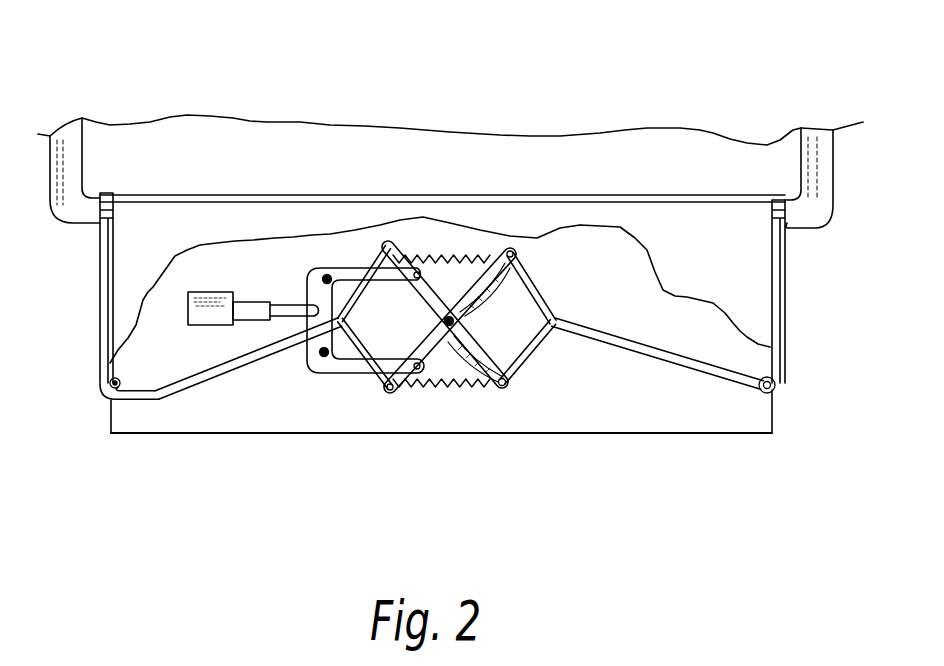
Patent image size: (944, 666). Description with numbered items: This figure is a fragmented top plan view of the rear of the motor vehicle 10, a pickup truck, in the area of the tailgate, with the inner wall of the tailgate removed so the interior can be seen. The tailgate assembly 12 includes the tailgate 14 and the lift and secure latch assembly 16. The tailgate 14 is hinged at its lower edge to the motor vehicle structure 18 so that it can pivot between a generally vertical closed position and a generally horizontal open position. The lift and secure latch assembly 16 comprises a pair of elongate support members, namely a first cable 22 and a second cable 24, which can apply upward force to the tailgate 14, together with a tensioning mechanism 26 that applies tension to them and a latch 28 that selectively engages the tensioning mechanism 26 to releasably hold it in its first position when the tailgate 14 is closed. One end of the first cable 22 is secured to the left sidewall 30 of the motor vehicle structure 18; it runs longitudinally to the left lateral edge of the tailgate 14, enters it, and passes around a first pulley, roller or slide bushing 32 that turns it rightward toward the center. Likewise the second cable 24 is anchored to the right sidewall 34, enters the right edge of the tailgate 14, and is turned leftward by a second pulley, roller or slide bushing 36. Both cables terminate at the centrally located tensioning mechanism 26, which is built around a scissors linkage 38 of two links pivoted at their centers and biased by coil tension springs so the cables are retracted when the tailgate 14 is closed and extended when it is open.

The motor vehicle 10 is at (453, 256).
The tailgate assembly 12 is at (441, 449).
The tailgate 14 is at (441, 471).
The lift and secure latch assembly 16 is at (431, 320).
The motor vehicle structure 18 is at (441, 195).
The first support member or cable 22 is at (75, 288).
The second support member or cable 24 is at (812, 291).
The tensioning mechanism 26 is at (452, 233).
The latch 28 is at (365, 223).
The left sidewall 30 is at (56, 192).
The first pulley, roller or slide bushing 32 is at (89, 420).
The right sidewall 34 is at (839, 189).
The second pulley, roller or slide bushing 36 is at (812, 409).
The scissors linkage 38 is at (539, 440).